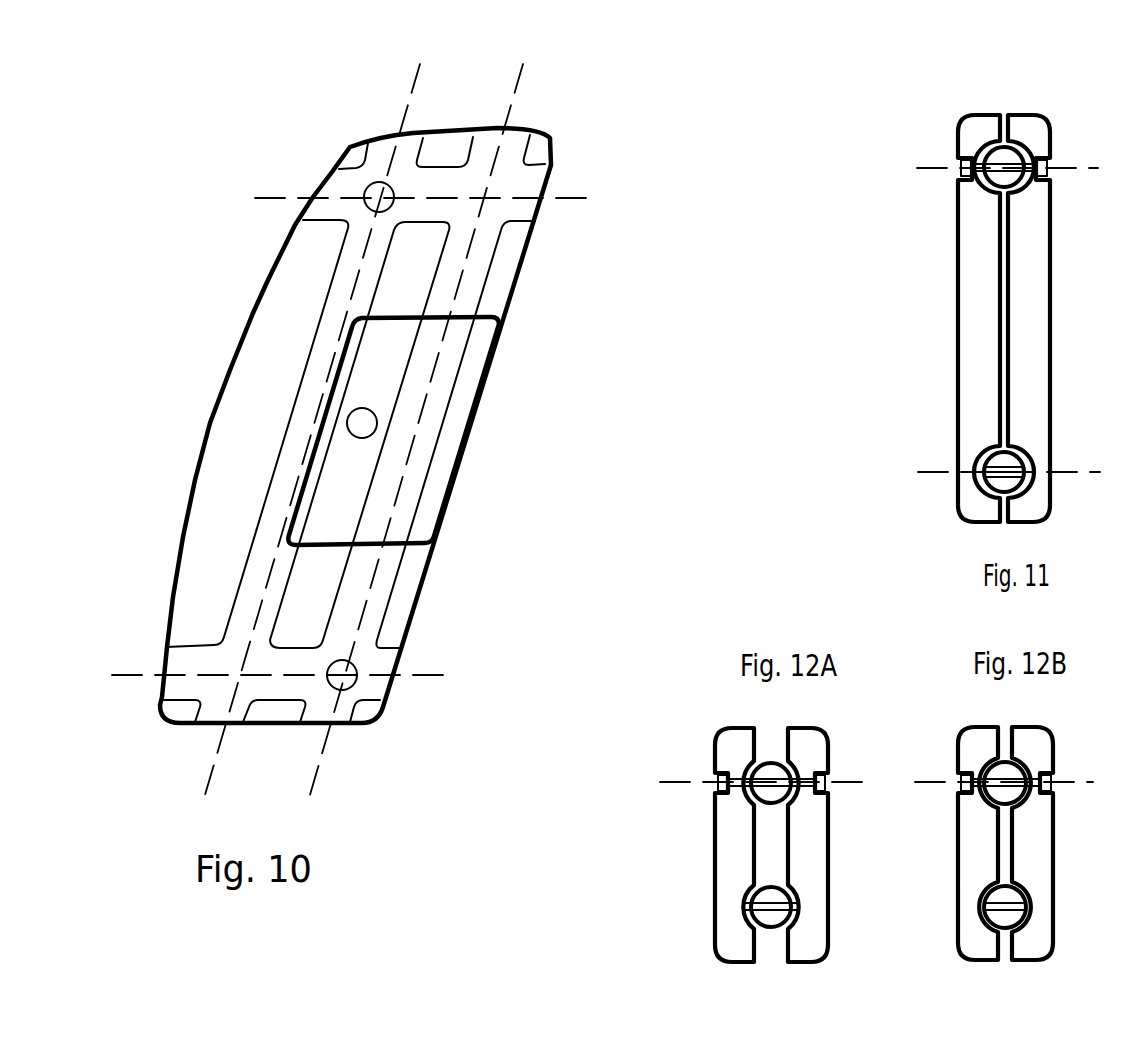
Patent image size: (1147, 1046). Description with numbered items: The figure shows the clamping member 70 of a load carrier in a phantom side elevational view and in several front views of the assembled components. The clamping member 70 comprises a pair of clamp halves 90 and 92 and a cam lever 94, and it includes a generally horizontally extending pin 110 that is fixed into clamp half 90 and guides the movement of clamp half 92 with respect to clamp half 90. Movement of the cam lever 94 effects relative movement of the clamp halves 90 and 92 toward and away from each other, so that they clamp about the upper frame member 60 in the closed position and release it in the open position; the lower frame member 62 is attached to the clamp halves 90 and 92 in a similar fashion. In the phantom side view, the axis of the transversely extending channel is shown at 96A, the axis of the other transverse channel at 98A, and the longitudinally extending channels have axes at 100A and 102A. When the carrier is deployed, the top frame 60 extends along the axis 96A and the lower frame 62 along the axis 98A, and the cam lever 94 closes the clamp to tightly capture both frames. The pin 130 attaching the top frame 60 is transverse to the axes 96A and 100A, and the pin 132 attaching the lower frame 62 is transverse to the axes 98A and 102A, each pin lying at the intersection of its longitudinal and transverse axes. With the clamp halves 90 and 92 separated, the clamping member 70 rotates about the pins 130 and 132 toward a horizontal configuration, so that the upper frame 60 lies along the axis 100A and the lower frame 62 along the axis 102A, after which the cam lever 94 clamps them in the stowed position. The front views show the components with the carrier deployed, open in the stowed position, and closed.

In FIG. 10, the clamping member 70 is at (139, 337).
In FIG. 10, the cam lever 94 is at (477, 420).
In FIG. 10, the axis of transversely extending channel 96A is at (392, 198).
In FIG. 10, the axis of transverse channel 98A is at (250, 676).
In FIG. 10, the axis of longitudinally extending channel 100A is at (328, 415).
In FIG. 10, the axis of longitudinally extending channel 102A is at (440, 415).
In FIG. 10, the pin 110 is at (376, 414).
In FIG. 10, the pin 130 is at (364, 193).
In FIG. 11, the pin 130 is at (958, 167).
In FIG. 12A, the pin 130 is at (727, 782).
In FIG. 12B, the pin 130 is at (958, 782).
In FIG. 10, the transversely extending pin 132 is at (353, 685).
In FIG. 11, the transversely extending pin 132 is at (985, 468).
In FIG. 12A, the transversely extending pin 132 is at (743, 907).
In FIG. 12B, the transversely extending pin 132 is at (987, 907).
In FIG. 11, the upper frame member 60 is at (1022, 150).
In FIG. 12A, the upper frame member 60 is at (780, 768).
In FIG. 12B, the upper frame member 60 is at (1015, 770).
In FIG. 11, the lower frame member 62 is at (1027, 455).
In FIG. 12A, the lower frame member 62 is at (787, 900).
In FIG. 12B, the lower frame member 62 is at (1027, 902).
In FIG. 11, the clamp half 90 is at (958, 308).
In FIG. 12A, the clamp half 90 is at (715, 828).
In FIG. 12B, the clamp half 90 is at (958, 828).
In FIG. 11, the clamp half 92 is at (1050, 300).
In FIG. 12A, the clamp half 92 is at (828, 828).
In FIG. 12B, the clamp half 92 is at (1053, 832).